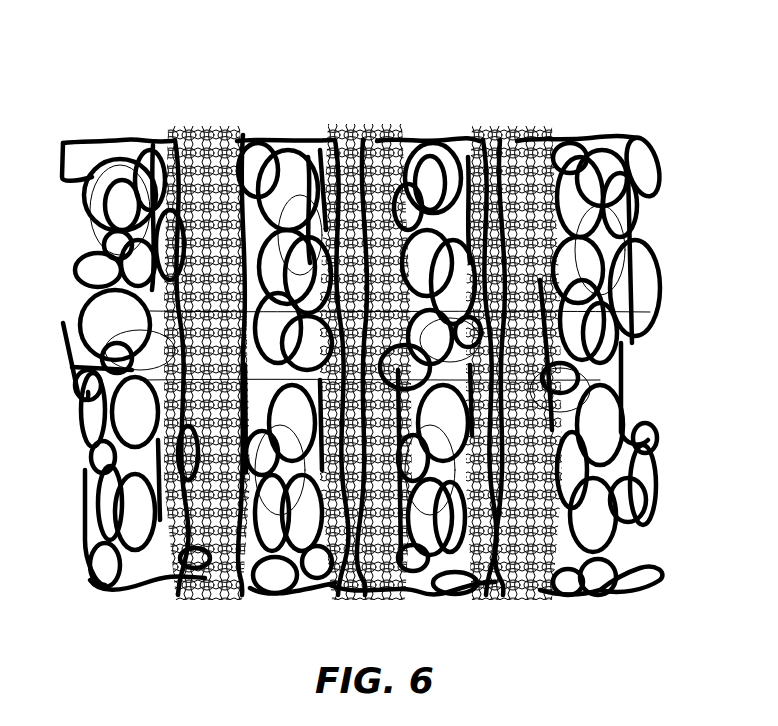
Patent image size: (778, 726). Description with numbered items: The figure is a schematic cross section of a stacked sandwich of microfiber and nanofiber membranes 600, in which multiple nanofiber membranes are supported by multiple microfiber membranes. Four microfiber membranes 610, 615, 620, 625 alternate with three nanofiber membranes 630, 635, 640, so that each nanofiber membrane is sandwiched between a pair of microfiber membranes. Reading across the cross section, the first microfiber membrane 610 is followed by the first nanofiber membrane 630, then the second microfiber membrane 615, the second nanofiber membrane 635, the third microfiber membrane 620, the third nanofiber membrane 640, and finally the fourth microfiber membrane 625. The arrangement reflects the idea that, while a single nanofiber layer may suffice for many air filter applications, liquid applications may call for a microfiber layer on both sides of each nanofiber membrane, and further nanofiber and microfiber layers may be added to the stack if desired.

The stacked sandwich of microfiber and nanofiber membranes 600 is at (599, 63).
The microfiber membrane 610 is at (128, 137).
The microfiber membrane 615 is at (285, 135).
The microfiber membrane 620 is at (438, 137).
The microfiber membrane 625 is at (593, 135).
The nanofiber membrane 630 is at (213, 580).
The nanofiber membrane 635 is at (368, 585).
The nanofiber membrane 640 is at (523, 583).